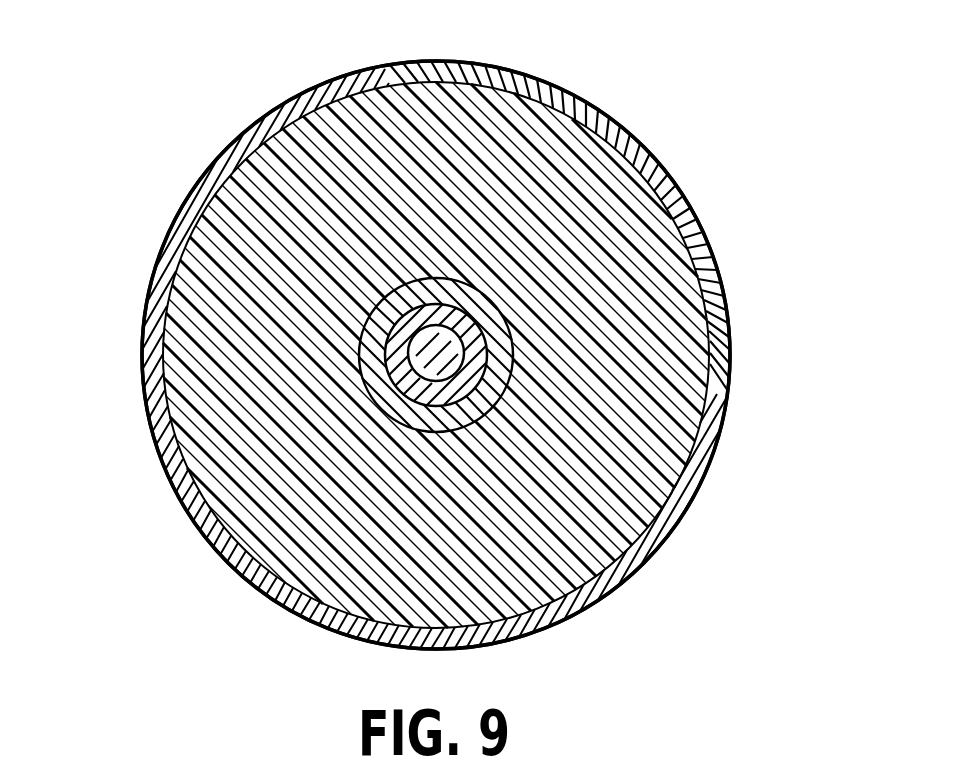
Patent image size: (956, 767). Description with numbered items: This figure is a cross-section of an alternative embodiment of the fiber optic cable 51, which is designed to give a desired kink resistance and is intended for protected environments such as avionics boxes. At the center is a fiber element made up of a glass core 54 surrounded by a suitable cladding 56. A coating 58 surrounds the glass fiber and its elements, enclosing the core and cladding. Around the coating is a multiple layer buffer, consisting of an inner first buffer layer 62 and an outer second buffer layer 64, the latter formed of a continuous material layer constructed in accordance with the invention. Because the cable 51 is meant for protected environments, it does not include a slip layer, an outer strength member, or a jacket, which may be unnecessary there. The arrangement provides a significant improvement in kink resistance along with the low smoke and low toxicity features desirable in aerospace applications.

The cable 51 is at (632, 68).
The core 54 is at (437, 352).
The cladding 56 is at (440, 388).
The coating 58 is at (458, 424).
The first buffer layer 62 is at (177, 345).
The second buffer layer 64 is at (190, 200).